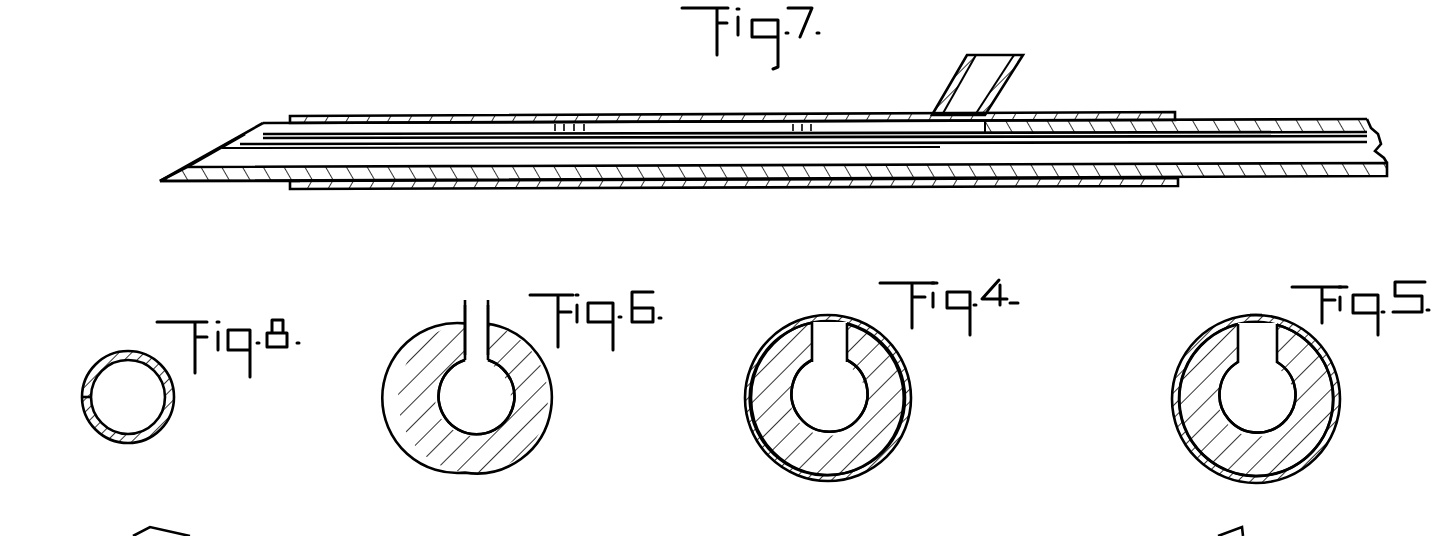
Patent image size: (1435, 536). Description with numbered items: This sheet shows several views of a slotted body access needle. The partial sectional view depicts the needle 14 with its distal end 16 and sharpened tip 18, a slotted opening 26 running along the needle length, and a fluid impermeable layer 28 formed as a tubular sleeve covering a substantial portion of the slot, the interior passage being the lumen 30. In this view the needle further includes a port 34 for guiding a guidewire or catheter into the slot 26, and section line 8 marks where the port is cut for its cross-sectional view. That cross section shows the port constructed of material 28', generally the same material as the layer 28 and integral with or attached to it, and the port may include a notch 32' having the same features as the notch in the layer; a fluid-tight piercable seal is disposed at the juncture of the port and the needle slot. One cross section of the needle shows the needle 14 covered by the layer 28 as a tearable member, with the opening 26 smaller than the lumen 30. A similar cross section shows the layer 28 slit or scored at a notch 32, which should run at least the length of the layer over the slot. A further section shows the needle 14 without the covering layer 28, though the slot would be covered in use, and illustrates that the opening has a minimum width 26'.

In FIG. 7, the needle 14 is at (1248, 127).
In FIG. 6, the needle 14 is at (412, 438).
In FIG. 4, the needle 14 is at (770, 423).
In FIG. 5, the needle 14 is at (1203, 430).
In FIG. 7, the distal end 16 is at (240, 184).
In FIG. 7, the sharpened tip 18 is at (162, 183).
In FIG. 7, the slotted opening 26 is at (732, 92).
In FIG. 4, the slotted opening 26 is at (839, 317).
In FIG. 5, the slotted opening 26 is at (1212, 331).
In FIG. 7, the fluid impermeable layer 28 is at (734, 207).
In FIG. 4, the fluid impermeable layer 28 is at (864, 398).
In FIG. 5, the fluid impermeable layer 28 is at (1295, 399).
In FIG. 7, the lumen 30 is at (1300, 150).
In FIG. 6, the lumen 30 is at (492, 397).
In FIG. 4, the lumen 30 is at (850, 398).
In FIG. 5, the lumen 30 is at (1278, 398).
In FIG. 5, the notch 32 is at (1228, 292).
In FIG. 7, the port 34 is at (1010, 45).
In FIG. 7, the line 8— 8 is at (953, 22).
In FIG. 6, the minimum width 26' is at (478, 301).
In FIG. 8, the material 28' is at (161, 402).
In FIG. 8, the notch 32' is at (88, 353).